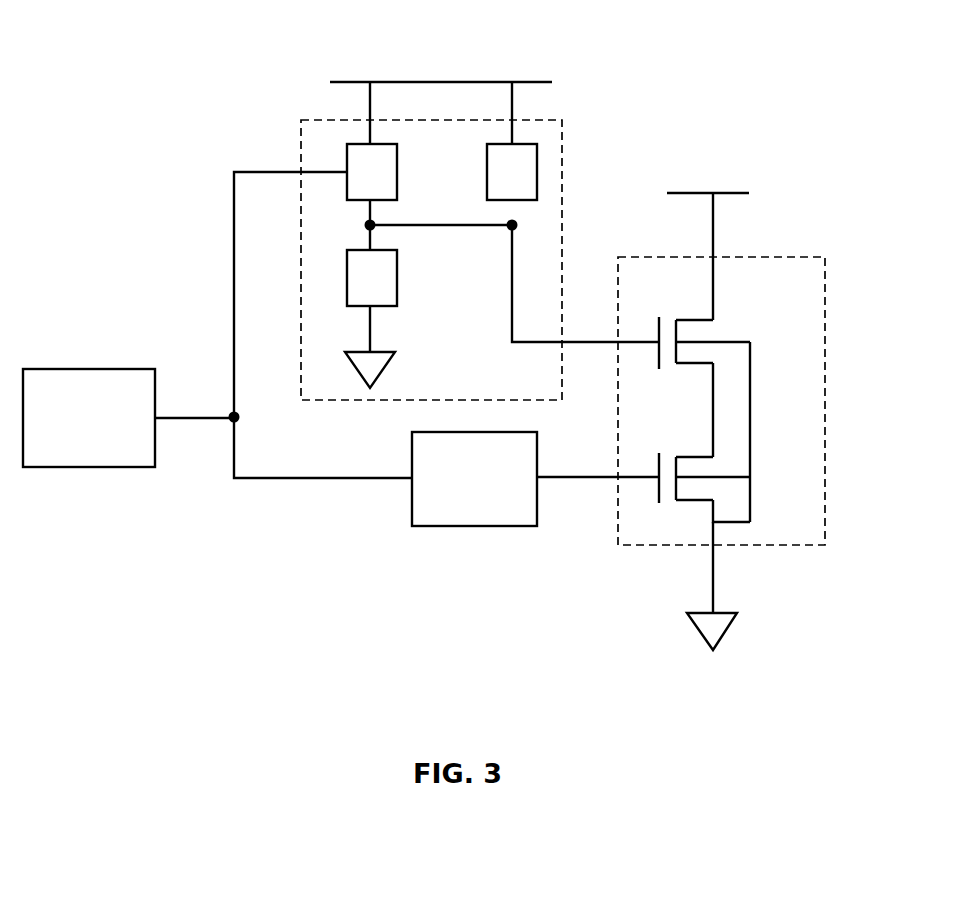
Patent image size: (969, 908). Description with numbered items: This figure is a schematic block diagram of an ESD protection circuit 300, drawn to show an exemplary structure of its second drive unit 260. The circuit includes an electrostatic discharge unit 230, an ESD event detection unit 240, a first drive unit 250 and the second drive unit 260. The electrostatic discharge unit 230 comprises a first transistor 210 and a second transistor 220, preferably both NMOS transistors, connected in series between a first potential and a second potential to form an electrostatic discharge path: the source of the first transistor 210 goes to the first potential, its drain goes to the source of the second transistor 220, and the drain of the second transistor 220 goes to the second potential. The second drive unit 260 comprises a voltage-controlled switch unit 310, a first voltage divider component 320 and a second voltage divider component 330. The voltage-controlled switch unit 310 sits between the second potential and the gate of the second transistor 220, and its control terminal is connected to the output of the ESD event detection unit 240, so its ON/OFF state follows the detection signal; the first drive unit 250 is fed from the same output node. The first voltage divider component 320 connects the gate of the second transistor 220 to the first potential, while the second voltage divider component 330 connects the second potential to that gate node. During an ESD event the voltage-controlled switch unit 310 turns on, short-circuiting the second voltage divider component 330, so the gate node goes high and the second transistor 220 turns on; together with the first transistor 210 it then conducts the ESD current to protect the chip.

The ESD protection circuit 300 is at (203, 118).
The second drive unit 260 is at (562, 133).
The voltage-controlled switch unit 310 is at (397, 157).
The first voltage divider component 320 is at (397, 290).
The second voltage divider component 330 is at (537, 182).
The electrostatic discharge unit 230 is at (790, 256).
The second transistor 220 is at (708, 333).
The first transistor 210 is at (718, 467).
The ESD event detection unit 240 is at (112, 438).
The first drive unit 250 is at (505, 498).